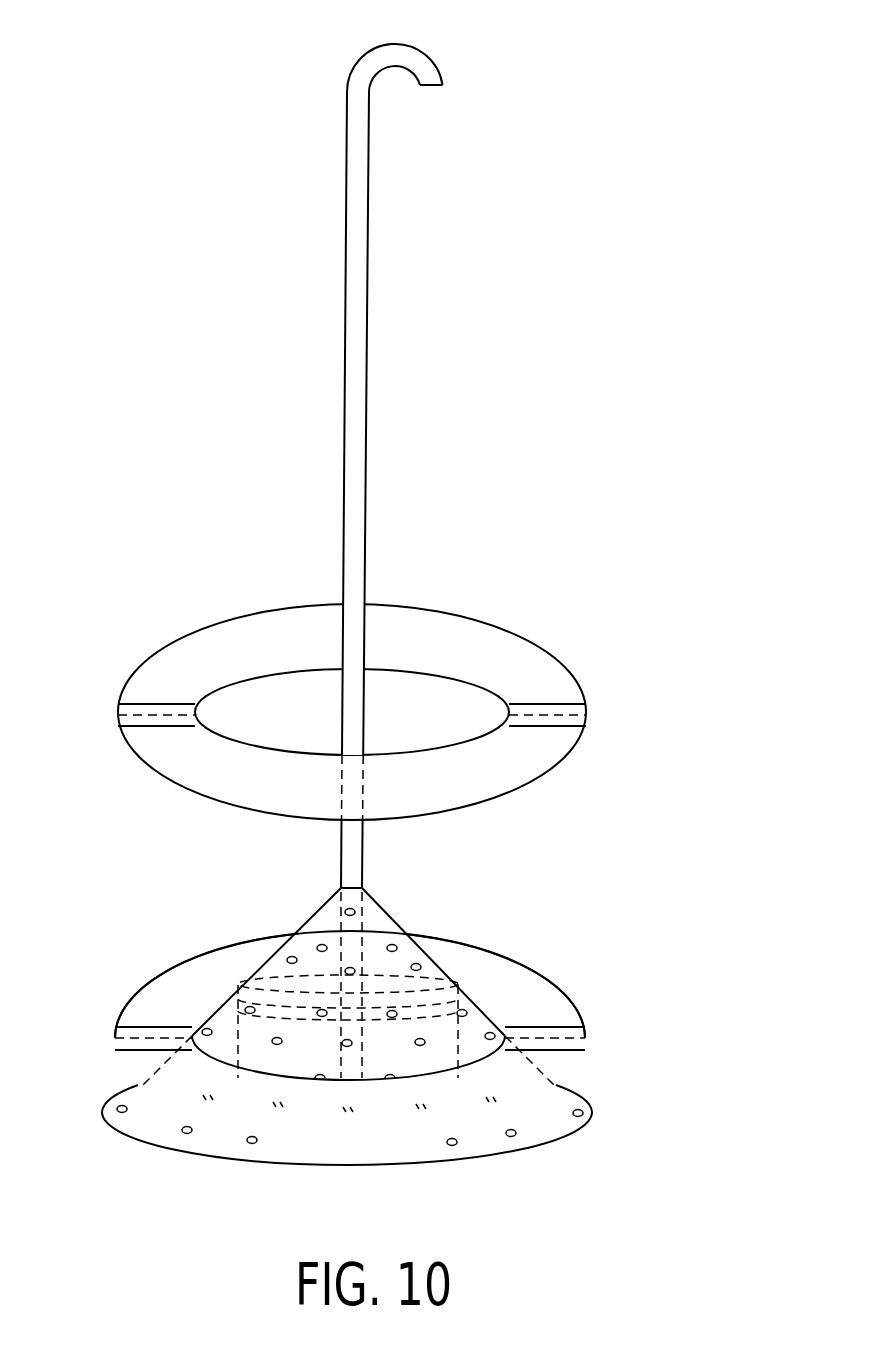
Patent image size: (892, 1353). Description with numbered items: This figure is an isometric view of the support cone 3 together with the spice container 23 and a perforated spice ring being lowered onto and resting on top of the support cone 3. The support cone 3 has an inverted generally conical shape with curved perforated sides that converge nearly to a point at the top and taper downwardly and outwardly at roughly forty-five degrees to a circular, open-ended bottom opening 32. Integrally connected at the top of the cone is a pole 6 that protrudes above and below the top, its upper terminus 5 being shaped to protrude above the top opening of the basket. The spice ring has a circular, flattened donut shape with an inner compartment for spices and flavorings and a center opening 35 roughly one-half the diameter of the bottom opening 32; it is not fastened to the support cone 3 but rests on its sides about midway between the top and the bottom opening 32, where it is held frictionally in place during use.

The support cone 3 is at (398, 917).
The upper terminus 5 is at (358, 61).
The pole 6 is at (368, 462).
The spice container 23 is at (425, 1008).
The bottom opening 32 is at (502, 1165).
The center opening 35 is at (273, 705).